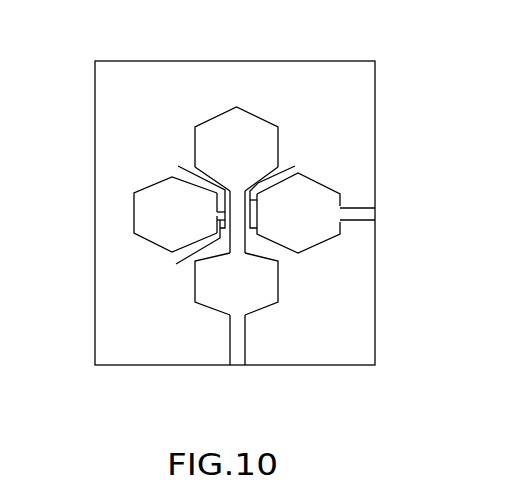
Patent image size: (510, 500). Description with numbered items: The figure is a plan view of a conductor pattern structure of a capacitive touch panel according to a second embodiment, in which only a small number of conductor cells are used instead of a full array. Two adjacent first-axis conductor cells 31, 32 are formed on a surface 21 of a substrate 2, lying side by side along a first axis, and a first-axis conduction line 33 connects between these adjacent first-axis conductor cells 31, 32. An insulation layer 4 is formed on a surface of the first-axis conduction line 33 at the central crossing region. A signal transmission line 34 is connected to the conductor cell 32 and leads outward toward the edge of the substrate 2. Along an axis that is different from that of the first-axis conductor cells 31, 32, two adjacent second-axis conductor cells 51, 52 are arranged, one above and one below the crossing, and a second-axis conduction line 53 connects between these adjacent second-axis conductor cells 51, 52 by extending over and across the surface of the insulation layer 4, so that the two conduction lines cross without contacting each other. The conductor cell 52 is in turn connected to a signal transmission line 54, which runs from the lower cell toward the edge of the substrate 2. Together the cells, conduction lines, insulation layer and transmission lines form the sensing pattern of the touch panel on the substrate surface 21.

The substrate 2 is at (198, 62).
The surface 21 is at (143, 70).
The second-axis conductor cell 51 is at (262, 128).
The second-axis conductor cell 52 is at (262, 308).
The signal transmission line 54 is at (237, 355).
The first-axis conductor cell 31 is at (134, 208).
The first-axis conductor cell 32 is at (342, 200).
The second-axis conduction line 53 is at (178, 167).
The first-axis conduction line 33 is at (177, 263).
The insulation layer 4 is at (295, 167).
The signal transmission line 34 is at (363, 222).